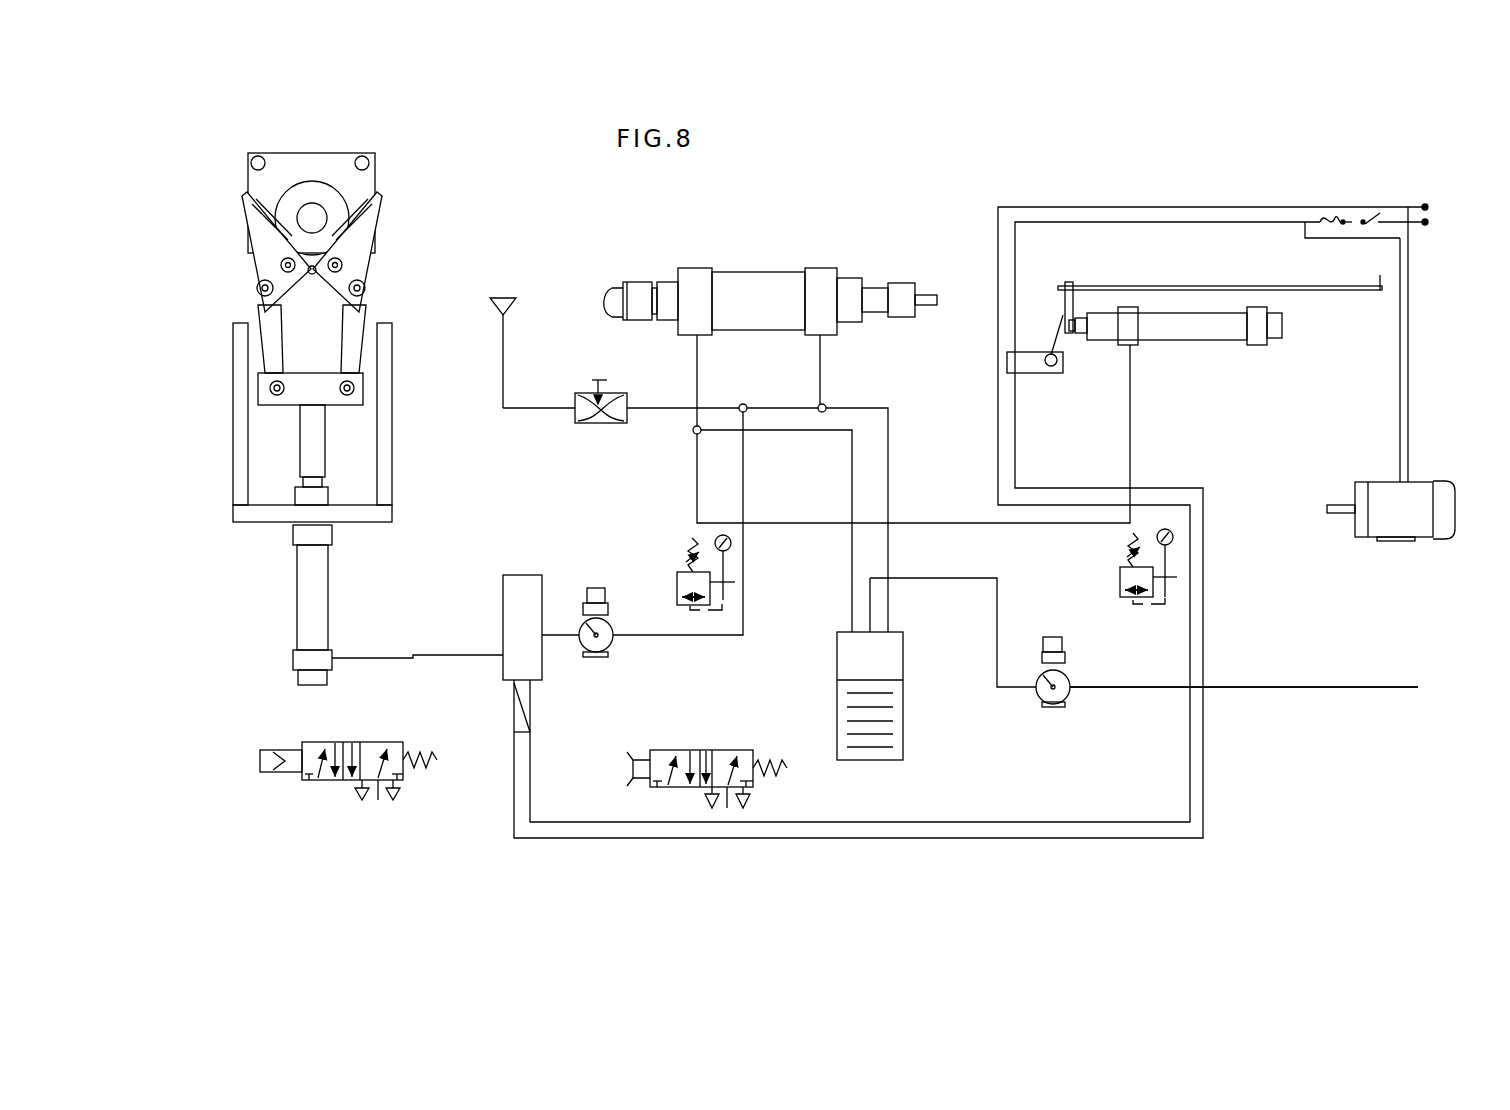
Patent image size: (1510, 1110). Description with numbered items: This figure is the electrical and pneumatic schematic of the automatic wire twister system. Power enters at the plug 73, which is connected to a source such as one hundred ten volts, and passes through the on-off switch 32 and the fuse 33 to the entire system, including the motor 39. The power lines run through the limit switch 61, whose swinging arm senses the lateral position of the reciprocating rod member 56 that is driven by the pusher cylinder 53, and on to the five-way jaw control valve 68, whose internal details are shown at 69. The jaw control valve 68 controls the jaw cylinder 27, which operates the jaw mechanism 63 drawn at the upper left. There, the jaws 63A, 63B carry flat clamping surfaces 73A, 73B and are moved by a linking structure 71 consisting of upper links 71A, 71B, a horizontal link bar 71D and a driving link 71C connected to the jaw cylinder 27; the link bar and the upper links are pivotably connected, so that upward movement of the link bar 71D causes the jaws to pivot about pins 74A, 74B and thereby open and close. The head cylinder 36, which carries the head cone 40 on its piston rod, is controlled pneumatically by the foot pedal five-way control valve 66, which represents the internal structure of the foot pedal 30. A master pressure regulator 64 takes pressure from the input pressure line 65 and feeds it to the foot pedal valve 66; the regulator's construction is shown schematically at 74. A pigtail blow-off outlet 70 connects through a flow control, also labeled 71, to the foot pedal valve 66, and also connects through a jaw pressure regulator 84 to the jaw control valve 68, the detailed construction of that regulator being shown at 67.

The jaw mechanism 63 is at (309, 199).
The flat clamping surface 73A is at (274, 212).
The flat clamping surface 73B is at (342, 212).
The jaw 63A is at (258, 243).
The jaw 63B is at (358, 243).
The linking structure 71 is at (408, 413).
The upper link 71A is at (272, 352).
The upper link 71B is at (348, 353).
The driving link 71C is at (315, 448).
The horizontal link bar 71D is at (328, 395).
The pin 74A is at (255, 383).
The pin 74B is at (355, 390).
The jaw cylinder 27 is at (315, 615).
The five-way jaw control valve 68 is at (417, 728).
The jaw control valve details 69 is at (328, 742).
The jaw pressure regulator 84 is at (596, 657).
The regulator construction detail 67 is at (618, 604).
The foot pedal five-way control valve 66 is at (687, 750).
The foot pedal 30 is at (767, 738).
The pigtail blow-off outlet 70 is at (503, 298).
The head cylinder 36 is at (770, 253).
The head cone 40 is at (634, 277).
The pusher cylinder 53 is at (1182, 332).
The reciprocating rod member 56 is at (1178, 288).
The limit switch 61 is at (1030, 365).
The fuse 33 is at (1330, 212).
The on-off switch 32 is at (1367, 215).
The plug 73 is at (1427, 213).
The master pressure regulator structure 74 is at (1072, 628).
The master pressure regulator 64 is at (1053, 707).
The input pressure line 65 is at (1392, 688).
The motor 39 is at (1400, 525).